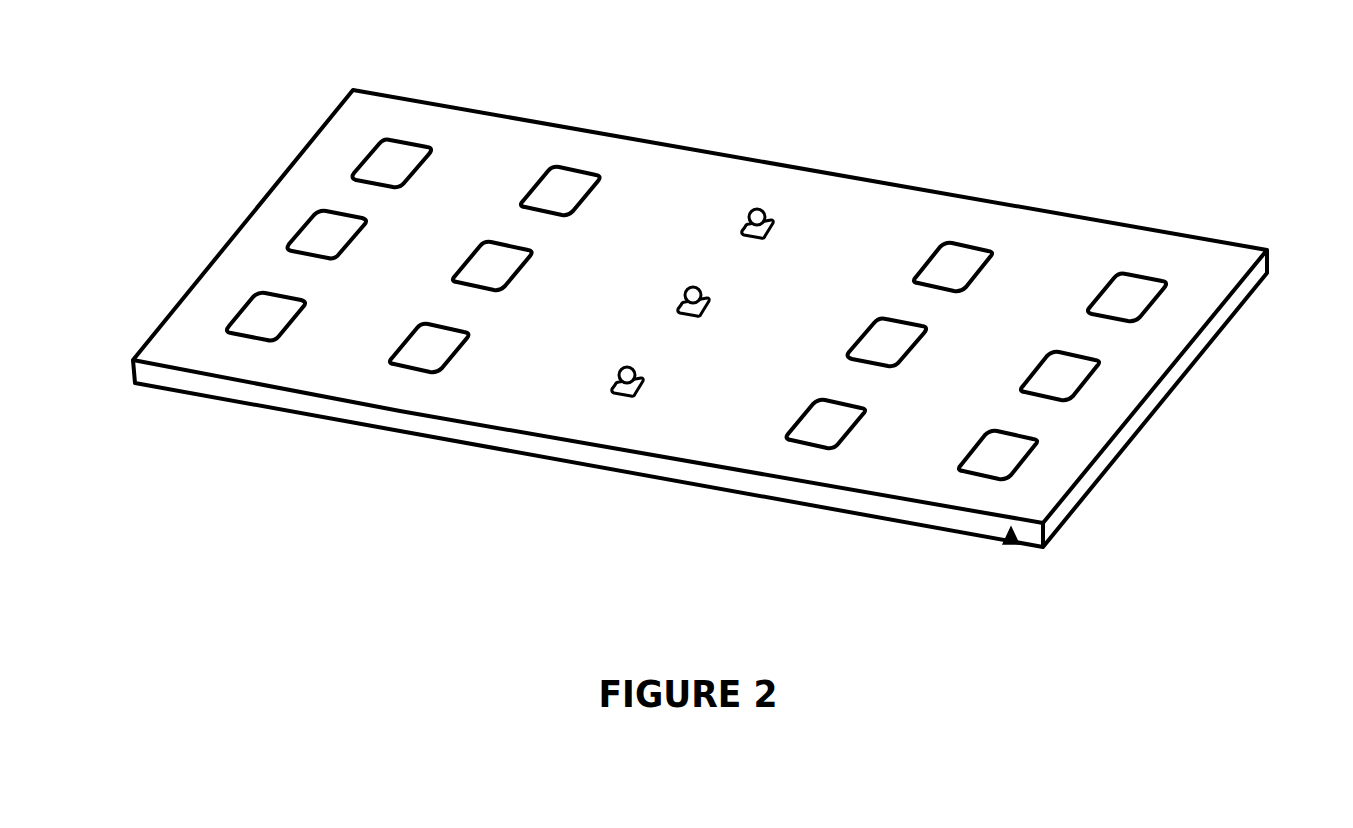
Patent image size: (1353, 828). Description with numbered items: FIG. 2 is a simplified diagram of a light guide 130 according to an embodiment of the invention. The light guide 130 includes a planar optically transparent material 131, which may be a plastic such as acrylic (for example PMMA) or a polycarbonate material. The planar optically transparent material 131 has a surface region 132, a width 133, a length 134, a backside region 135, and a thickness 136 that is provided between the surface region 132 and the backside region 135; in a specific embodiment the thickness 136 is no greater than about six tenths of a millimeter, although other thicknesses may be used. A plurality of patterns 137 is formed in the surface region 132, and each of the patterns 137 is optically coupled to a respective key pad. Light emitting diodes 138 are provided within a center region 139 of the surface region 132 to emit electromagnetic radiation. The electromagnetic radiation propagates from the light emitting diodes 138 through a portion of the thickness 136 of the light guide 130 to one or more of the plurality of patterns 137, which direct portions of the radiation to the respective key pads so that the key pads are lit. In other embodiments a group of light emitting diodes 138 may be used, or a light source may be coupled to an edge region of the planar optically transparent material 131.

The light guide 130 is at (740, 342).
The planar optically transparent material 131 is at (1178, 130).
The surface region 132 is at (1068, 463).
The width 133 is at (355, 42).
The length 134 is at (343, 85).
The backside region 135 is at (918, 531).
The thickness 136 is at (1010, 548).
The plurality of patterns 137 is at (377, 369).
The light emitting diodes 138 is at (704, 297).
The center region 139 is at (590, 420).